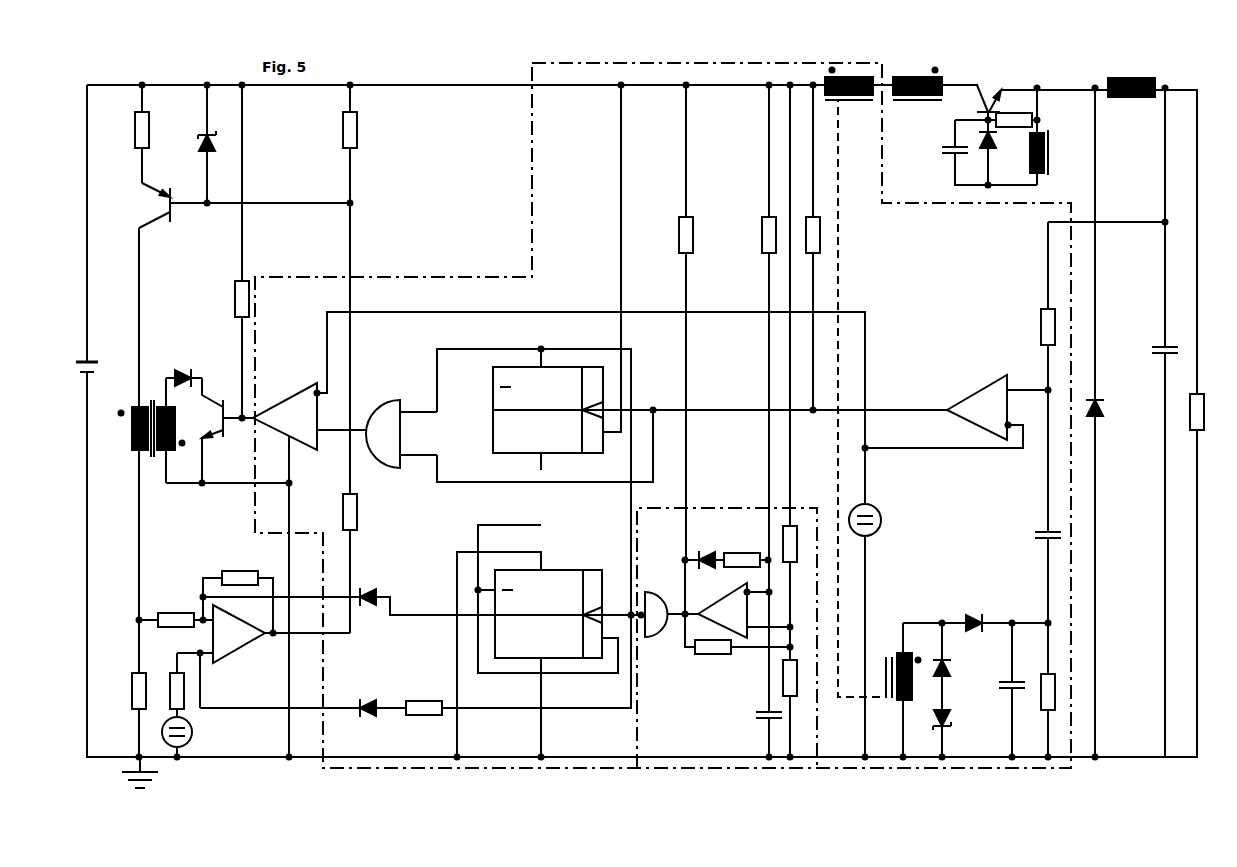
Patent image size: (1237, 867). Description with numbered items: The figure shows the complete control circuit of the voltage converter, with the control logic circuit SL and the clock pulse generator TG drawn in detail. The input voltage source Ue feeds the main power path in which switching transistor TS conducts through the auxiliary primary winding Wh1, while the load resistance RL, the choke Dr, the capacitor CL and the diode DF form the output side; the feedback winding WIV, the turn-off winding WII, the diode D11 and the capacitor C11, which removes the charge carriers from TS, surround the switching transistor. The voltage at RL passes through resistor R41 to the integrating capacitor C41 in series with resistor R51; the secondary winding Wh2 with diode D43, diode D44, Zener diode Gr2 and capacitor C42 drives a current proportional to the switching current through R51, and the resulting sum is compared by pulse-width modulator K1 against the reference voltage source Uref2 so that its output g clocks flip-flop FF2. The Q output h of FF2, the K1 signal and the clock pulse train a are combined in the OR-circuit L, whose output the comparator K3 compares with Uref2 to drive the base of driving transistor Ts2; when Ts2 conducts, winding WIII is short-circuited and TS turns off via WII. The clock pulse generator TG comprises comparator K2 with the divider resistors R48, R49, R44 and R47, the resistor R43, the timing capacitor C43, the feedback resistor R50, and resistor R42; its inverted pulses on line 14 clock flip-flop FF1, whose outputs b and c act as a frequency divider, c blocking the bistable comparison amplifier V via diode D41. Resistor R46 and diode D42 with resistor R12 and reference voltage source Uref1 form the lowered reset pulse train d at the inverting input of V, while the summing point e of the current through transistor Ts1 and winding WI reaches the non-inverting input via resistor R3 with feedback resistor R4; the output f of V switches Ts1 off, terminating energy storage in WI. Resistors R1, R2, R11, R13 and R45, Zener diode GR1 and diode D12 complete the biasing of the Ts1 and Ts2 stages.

The resistor R1 is at (135, 134).
The Zener diode GR1 is at (187, 144).
The transistor Ts1 is at (162, 214).
The resistor R11 is at (359, 118).
The resistor R13 is at (367, 512).
The resistor R45 is at (223, 251).
The input voltage source Ue is at (94, 358).
The diode D12 is at (184, 372).
The winding WI is at (118, 428).
The transformer winding WIII is at (162, 475).
The driving transistor Ts2 is at (213, 442).
The comparator K3 is at (286, 416).
The logic gate circuit L is at (386, 402).
The output signal Q of flip-flop FF2 h is at (465, 430).
The flip-flop FF2 is at (554, 416).
The output Q-bar of flip-flop FF1 b is at (478, 525).
The flip-flop FF1 is at (555, 603).
The clock pulse generator output a is at (583, 708).
The output Q of flip-flop FF1 c is at (390, 625).
The reset pulse train d is at (235, 708).
The summing point signal e is at (203, 618).
The output of amplifier V f is at (275, 630).
The output of pulse-width modulator K1 g is at (917, 410).
The inverted clock pulse line 14 is at (500, 708).
The diode D41 is at (296, 591).
The diode D42 is at (366, 722).
The resistor R46 is at (423, 723).
The resistor R3 is at (176, 610).
The resistor R4 is at (238, 589).
The bistable comparison amplifier V is at (263, 634).
The resistor R12 is at (176, 674).
The resistor R2 is at (120, 691).
The reference voltage source Uref1 is at (197, 737).
The control logic circuit SL is at (532, 188).
The RC clock pulse generator TG is at (734, 507).
The resistor R44 is at (669, 322).
The resistor R43 is at (750, 421).
The resistor R42 is at (826, 247).
The resistor R49 is at (796, 528).
The resistor R50 is at (729, 552).
The comparator K2 is at (717, 610).
The resistor R47 is at (715, 657).
The resistor R48 is at (783, 680).
The capacitor C43 is at (762, 727).
The primary winding of auxiliary transformer Wh1 is at (855, 387).
The feedback winding WIV is at (915, 100).
The switching transistor TS is at (971, 124).
The diode D11 is at (1003, 153).
The capacitor C11 is at (975, 149).
The winding WII is at (1054, 136).
The choke Dr is at (1131, 78).
The load capacitor CL is at (1159, 422).
The load resistance RL is at (1186, 421).
The free-wheeling diode DF is at (1104, 422).
The resistor R41 is at (1032, 327).
The pulse-width modulator K1 is at (956, 411).
The reference voltage source Uref2 is at (885, 520).
The capacitor C41 is at (1035, 536).
The secondary winding of auxiliary transformer Wh2 is at (897, 650).
The diode D43 is at (973, 612).
The diode D44 is at (958, 690).
The Zener diode Gr2 is at (953, 731).
The capacitor C42 is at (999, 690).
The resistor R51 is at (1037, 705).